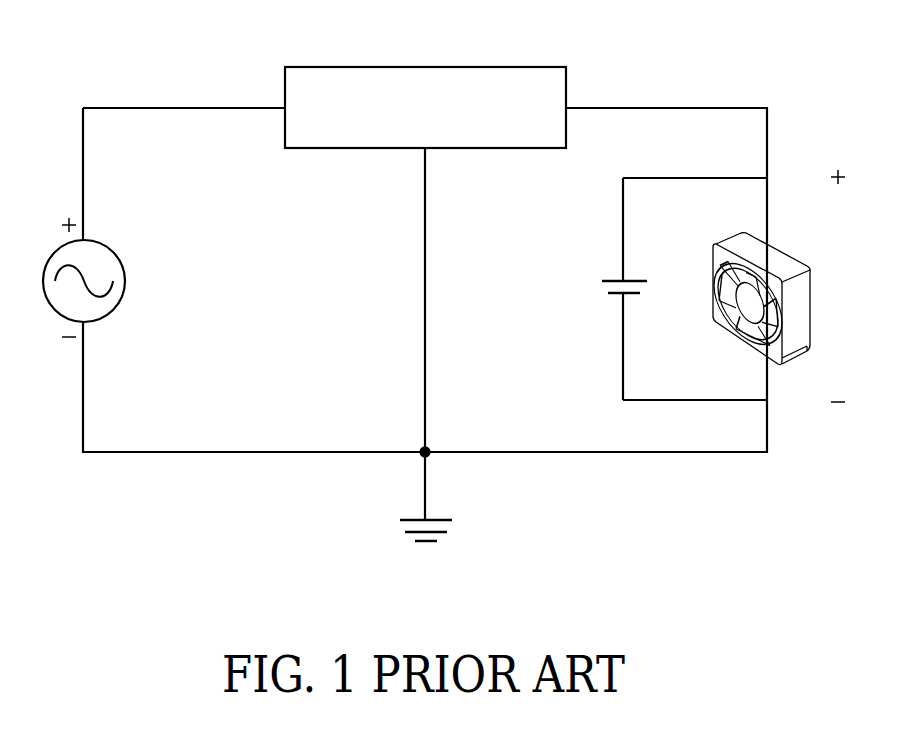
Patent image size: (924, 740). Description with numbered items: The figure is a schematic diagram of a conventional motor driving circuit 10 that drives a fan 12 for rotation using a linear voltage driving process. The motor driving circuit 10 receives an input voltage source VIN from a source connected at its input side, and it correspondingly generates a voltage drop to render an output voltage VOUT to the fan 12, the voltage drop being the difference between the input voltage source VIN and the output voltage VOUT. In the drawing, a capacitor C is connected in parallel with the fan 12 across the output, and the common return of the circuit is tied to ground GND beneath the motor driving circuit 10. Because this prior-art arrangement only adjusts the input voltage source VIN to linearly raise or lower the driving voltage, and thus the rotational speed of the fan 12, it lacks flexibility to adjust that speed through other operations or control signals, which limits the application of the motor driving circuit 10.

The motor driving circuit 10 is at (537, 67).
The fan 12 is at (753, 346).
The capacitor C is at (612, 285).
The input voltage source VIN is at (114, 277).
The output voltage VOUT is at (857, 286).
The ground GND is at (429, 550).